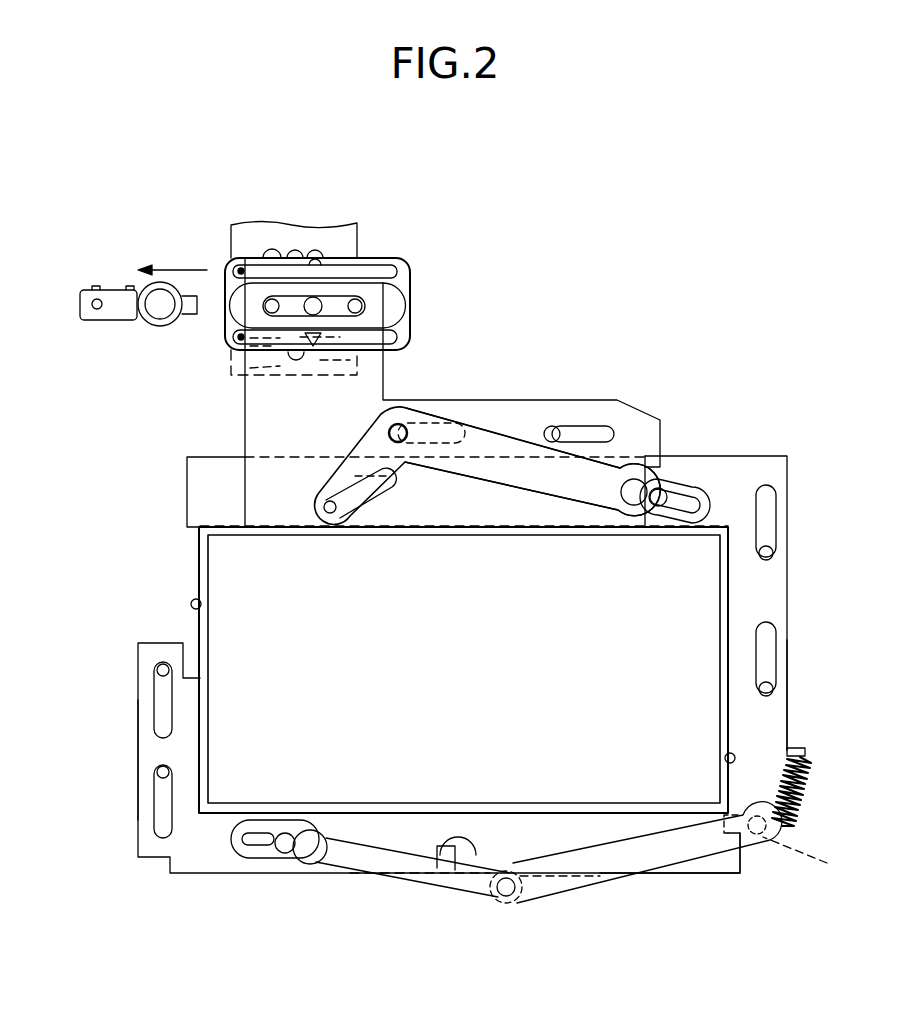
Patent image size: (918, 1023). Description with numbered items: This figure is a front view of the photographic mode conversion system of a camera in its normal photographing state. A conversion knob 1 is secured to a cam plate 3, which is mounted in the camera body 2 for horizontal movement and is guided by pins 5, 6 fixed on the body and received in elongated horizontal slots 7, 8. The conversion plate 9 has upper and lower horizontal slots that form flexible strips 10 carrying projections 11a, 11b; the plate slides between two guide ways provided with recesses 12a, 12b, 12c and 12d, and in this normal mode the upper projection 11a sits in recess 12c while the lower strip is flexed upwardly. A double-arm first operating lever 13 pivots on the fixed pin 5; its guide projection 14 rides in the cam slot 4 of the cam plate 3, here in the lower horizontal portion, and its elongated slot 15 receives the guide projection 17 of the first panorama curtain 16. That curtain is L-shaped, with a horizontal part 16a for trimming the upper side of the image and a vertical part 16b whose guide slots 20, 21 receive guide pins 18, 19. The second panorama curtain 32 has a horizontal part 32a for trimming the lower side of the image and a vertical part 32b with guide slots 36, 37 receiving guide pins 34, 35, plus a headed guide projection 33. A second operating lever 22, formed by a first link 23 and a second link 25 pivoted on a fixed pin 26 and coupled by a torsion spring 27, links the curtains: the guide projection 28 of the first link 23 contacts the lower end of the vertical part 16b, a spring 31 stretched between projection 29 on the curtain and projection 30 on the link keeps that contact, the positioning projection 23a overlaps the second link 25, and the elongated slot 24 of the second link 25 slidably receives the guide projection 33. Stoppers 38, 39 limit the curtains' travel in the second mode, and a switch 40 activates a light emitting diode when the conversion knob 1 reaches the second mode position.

The conversion knob 1 is at (400, 300).
The camera body 2 is at (240, 236).
The cam plate 3 is at (245, 405).
The cam slot 4 is at (345, 482).
The pin 5 is at (410, 436).
The pin 6 is at (552, 428).
The elongated horizontal slot 7 is at (442, 440).
The elongated horizontal slot 8 is at (580, 435).
The conversion plate 9 is at (400, 278).
The flexible strip 10 is at (240, 270).
The projection 11a is at (320, 262).
The projection 11b is at (340, 343).
The recess 12a is at (315, 252).
The recess 12b is at (295, 250).
The recess 12c is at (272, 250).
The recess 12d is at (282, 372).
The first operating lever 13 is at (608, 470).
The guide projection 14 is at (325, 497).
The elongated slot 15 is at (693, 505).
The first panorama curtain 16 is at (795, 574).
The horizontal part 16a is at (200, 500).
The vertical part 16b is at (780, 716).
The guide projection 17 is at (660, 492).
The guide pin 18 is at (768, 553).
The guide pin 19 is at (768, 688).
The guide slot 20 is at (768, 490).
The guide slot 21 is at (768, 630).
The second operating lever 22 is at (445, 912).
The first link 23 is at (657, 858).
The positioning projection 23a is at (482, 882).
The elongated slot 24 is at (240, 860).
The second link 25 is at (398, 860).
The pin 26 is at (512, 896).
The torsion spring 27 is at (582, 888).
The guide projection 28 is at (813, 858).
The projection 29 is at (806, 752).
The projection 30 is at (778, 825).
The spring 31 is at (797, 795).
The second panorama curtain 32 is at (132, 738).
The horizontal part 32a is at (732, 860).
The vertical part 32b is at (150, 752).
The guide projection 33 is at (288, 855).
The guide pin 34 is at (158, 670).
The guide pin 35 is at (158, 775).
The guide slot 36 is at (160, 712).
The guide slot 37 is at (160, 825).
The stopper 38 is at (191, 604).
The stopper 39 is at (735, 758).
The switch 40 is at (92, 304).